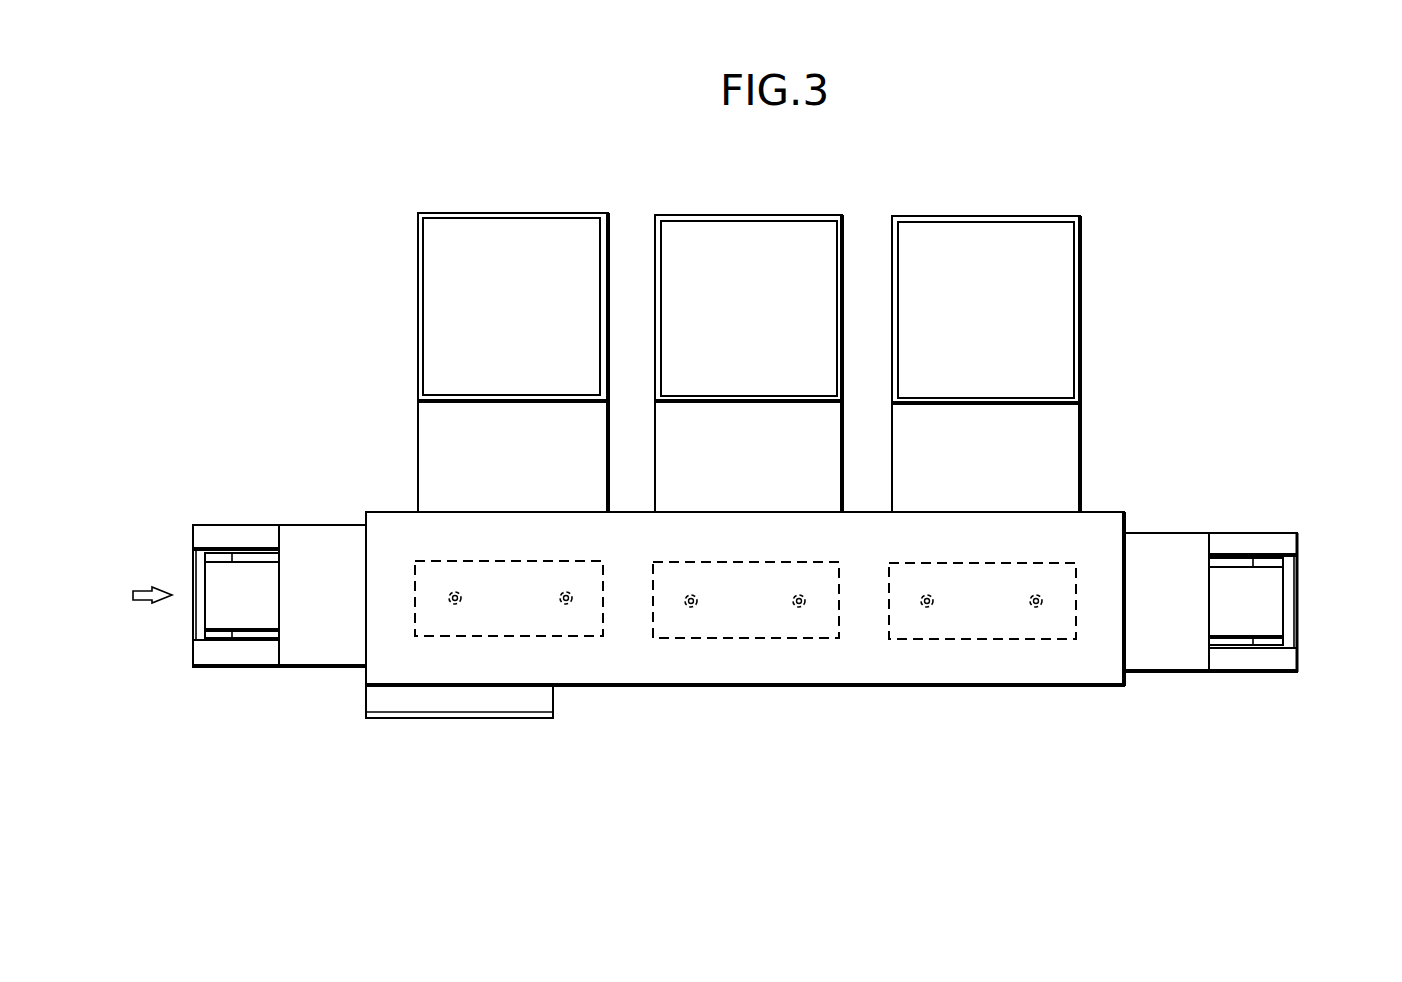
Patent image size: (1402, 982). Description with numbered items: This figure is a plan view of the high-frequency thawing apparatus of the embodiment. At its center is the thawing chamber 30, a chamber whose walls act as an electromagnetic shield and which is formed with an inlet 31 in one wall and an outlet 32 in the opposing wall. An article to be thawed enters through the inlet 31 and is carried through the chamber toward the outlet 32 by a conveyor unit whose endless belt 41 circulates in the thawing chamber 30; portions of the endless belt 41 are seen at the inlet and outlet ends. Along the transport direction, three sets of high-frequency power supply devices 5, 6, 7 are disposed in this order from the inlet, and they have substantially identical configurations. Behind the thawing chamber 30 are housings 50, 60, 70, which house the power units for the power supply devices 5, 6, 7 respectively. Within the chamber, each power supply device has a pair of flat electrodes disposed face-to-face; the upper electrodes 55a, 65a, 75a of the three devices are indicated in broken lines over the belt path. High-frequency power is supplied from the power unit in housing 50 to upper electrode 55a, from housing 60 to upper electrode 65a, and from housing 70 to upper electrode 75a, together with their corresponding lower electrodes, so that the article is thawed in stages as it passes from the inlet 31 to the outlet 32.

The high-frequency power supply device 5 is at (612, 401).
The high-frequency power supply device 6 is at (846, 401).
The high-frequency power supply device 7 is at (1086, 402).
The thawing chamber 30 is at (855, 689).
The inlet 31 is at (182, 582).
The outlet 32 is at (1306, 600).
The endless belt 41 is at (250, 617).
The housing 50 is at (418, 328).
The upper electrode 55a is at (580, 637).
The housing 60 is at (866, 308).
The upper electrode 65a is at (733, 639).
The housing 70 is at (1082, 290).
The upper electrode 75a is at (975, 640).